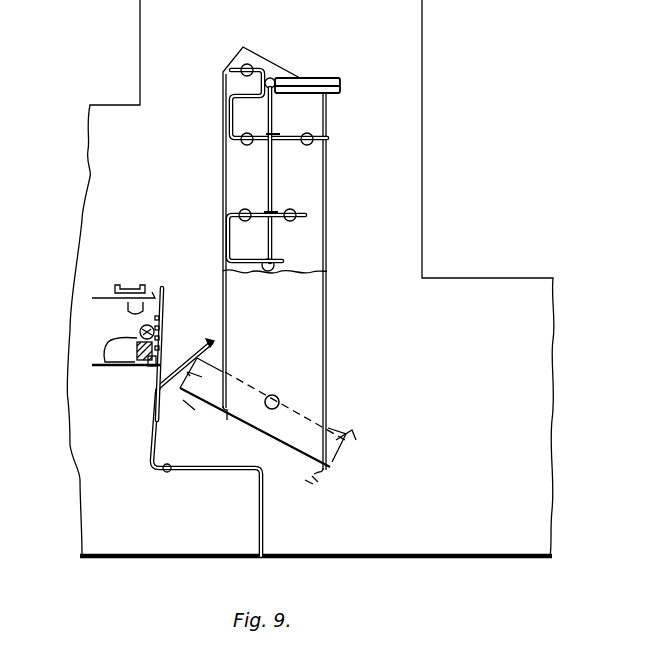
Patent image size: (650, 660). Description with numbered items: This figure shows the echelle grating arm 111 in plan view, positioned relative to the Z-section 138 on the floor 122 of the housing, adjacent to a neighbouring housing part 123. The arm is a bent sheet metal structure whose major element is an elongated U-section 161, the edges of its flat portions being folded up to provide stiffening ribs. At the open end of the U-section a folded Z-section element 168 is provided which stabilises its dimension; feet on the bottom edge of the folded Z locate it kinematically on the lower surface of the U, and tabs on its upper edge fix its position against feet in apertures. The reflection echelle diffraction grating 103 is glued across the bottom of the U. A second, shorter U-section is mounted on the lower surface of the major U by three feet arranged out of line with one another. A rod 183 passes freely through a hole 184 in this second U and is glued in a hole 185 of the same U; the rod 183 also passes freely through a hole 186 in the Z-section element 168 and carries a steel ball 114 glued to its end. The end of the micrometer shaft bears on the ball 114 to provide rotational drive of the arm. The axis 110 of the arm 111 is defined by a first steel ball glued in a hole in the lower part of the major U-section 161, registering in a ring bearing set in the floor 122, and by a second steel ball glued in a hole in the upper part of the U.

The reflection echelle diffraction grating 103 is at (336, 431).
The axis 110 is at (279, 400).
The echelle grating arm 111 is at (327, 348).
The steel ball 114 is at (272, 80).
The floor 122 is at (497, 290).
The housing part 123 is at (150, 37).
The Z-section 138 is at (205, 471).
The elongated U-section 161 is at (309, 232).
The folded Z-section element 168 is at (292, 137).
The rod 183 is at (272, 161).
The hole 184 is at (274, 272).
The hole 185 is at (273, 212).
The hole 186 is at (278, 134).